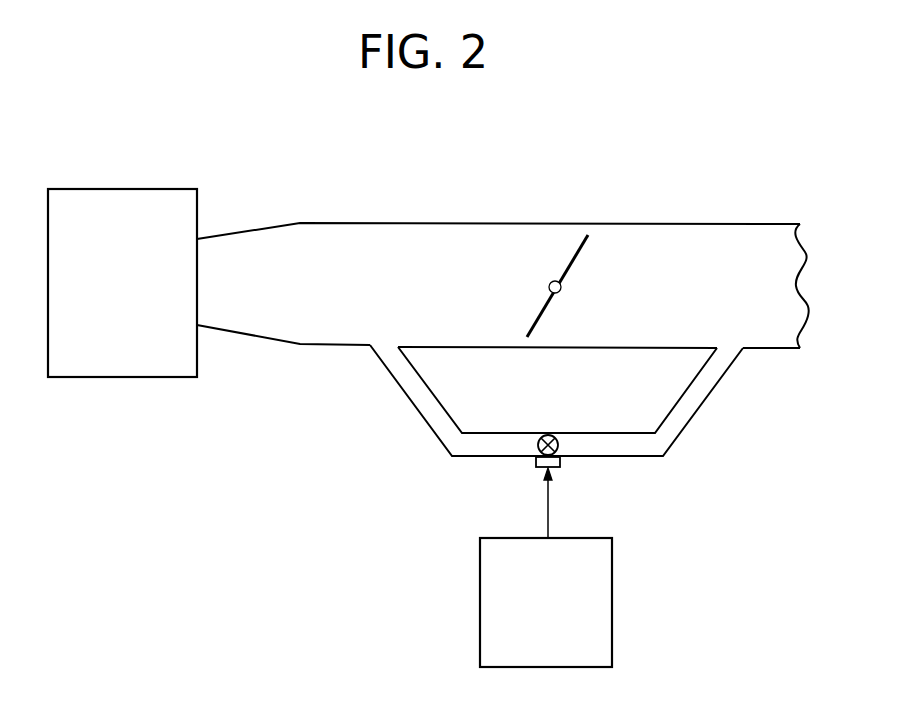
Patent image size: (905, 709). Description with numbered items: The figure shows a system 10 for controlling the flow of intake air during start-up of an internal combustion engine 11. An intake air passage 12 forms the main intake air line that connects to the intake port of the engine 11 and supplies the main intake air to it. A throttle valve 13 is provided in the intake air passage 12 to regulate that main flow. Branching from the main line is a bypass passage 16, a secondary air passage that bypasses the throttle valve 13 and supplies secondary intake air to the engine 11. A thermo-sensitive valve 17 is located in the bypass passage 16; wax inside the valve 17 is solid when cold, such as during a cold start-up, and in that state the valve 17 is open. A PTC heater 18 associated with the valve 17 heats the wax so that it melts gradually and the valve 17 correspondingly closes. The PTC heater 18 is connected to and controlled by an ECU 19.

The system for controlling intake air flow 10 is at (405, 537).
The internal combustion engine 11 is at (160, 189).
The intake air passage 12 is at (440, 223).
The throttle valve 13 is at (575, 250).
The bypass passage 16 is at (422, 418).
The thermo-sensitive valve 17 is at (548, 435).
The PTC heater 18 is at (560, 465).
The ECU 19 is at (612, 587).